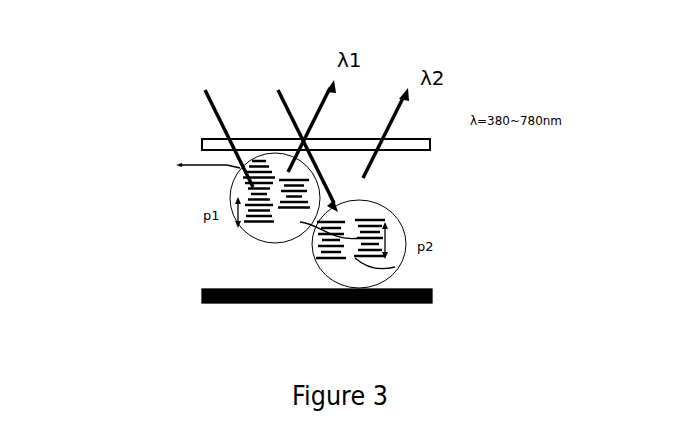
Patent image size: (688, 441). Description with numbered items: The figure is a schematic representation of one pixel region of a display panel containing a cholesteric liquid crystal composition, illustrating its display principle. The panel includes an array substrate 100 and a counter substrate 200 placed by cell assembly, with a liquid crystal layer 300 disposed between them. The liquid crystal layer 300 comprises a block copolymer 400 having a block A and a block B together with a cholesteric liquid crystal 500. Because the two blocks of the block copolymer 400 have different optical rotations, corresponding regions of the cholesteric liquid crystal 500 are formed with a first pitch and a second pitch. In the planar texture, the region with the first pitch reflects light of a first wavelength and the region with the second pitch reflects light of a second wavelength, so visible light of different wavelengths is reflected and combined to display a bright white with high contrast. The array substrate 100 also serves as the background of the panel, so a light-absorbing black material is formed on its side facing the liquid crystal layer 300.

The array substrate 100 is at (443, 298).
The counter substrate 200 is at (447, 147).
The liquid crystal layer 300 is at (433, 160).
The block copolymer 400 is at (305, 220).
The cholesteric liquid crystal 500 is at (320, 248).